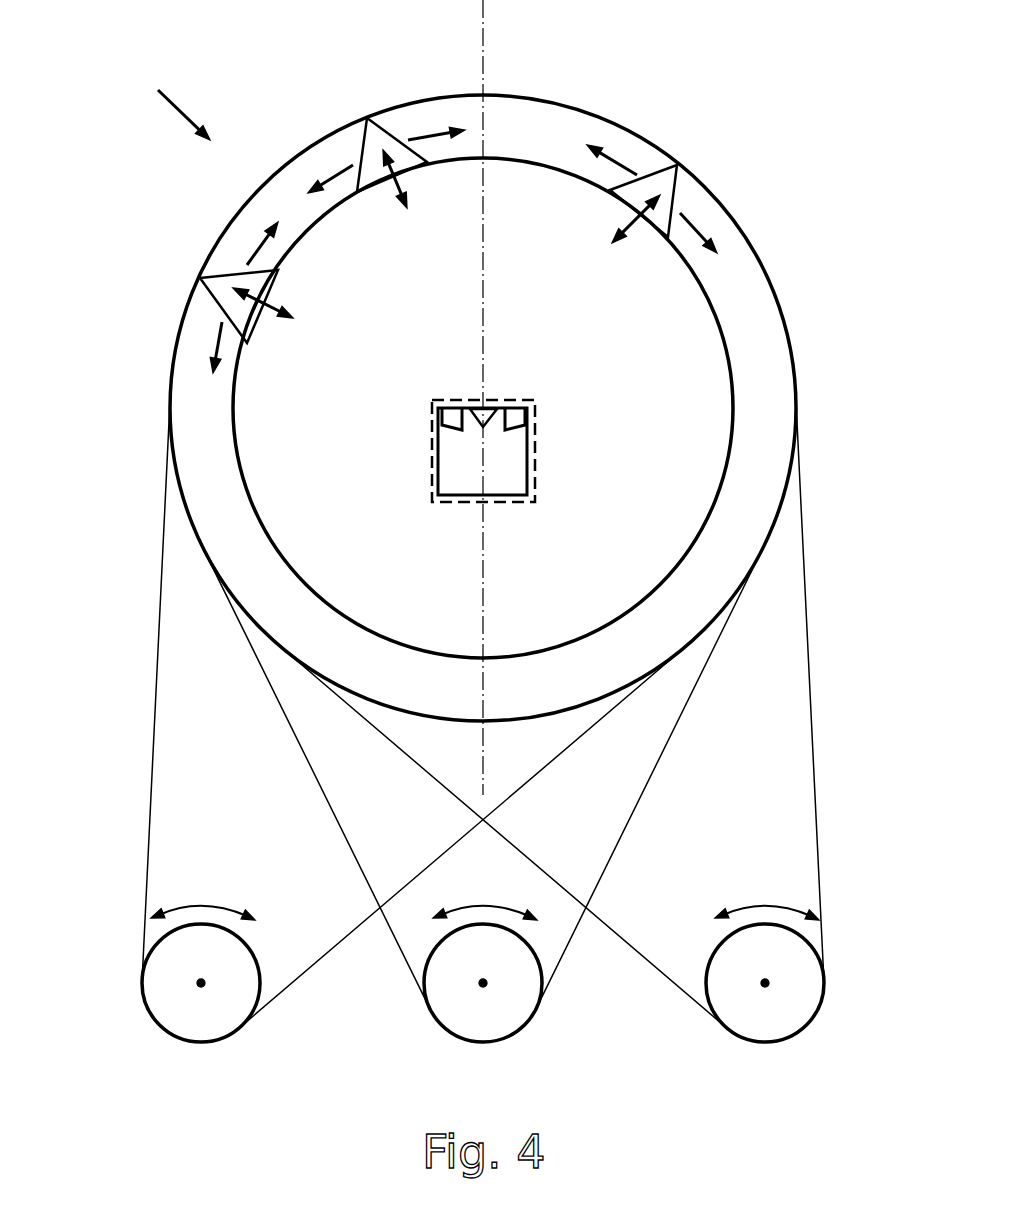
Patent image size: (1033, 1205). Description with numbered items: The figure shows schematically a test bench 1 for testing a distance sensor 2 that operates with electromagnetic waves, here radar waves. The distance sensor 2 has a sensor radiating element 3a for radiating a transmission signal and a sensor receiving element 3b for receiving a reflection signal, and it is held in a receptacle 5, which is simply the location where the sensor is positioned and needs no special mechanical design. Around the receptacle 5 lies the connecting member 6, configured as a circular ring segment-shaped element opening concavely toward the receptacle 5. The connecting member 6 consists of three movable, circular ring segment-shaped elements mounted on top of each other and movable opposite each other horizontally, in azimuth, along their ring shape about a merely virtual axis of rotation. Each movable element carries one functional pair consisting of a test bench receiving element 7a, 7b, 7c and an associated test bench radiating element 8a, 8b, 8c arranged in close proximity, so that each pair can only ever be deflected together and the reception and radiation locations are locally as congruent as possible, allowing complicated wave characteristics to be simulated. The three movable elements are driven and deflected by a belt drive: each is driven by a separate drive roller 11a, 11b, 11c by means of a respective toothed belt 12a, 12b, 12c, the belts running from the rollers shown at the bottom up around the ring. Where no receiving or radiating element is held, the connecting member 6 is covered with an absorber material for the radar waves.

The test bench 1 is at (168, 96).
The distance sensor 2 is at (482, 453).
The sensor radiating element 3a is at (487, 423).
The sensor receiving element 3b is at (440, 425).
The receptacle 5 is at (532, 486).
The connecting member 6 is at (765, 320).
The test bench receiving element 7a is at (203, 288).
The test bench receiving element 7b is at (368, 132).
The test bench receiving element 7c is at (670, 160).
The test bench radiating element 8a is at (251, 297).
The test bench radiating element 8b is at (386, 167).
The test bench radiating element 8c is at (652, 199).
The drive roller 11a is at (201, 974).
The drive roller 11b is at (483, 974).
The drive roller 11c is at (765, 974).
The toothed belt 12a is at (155, 825).
The toothed belt 12b is at (630, 823).
The toothed belt 12c is at (818, 825).